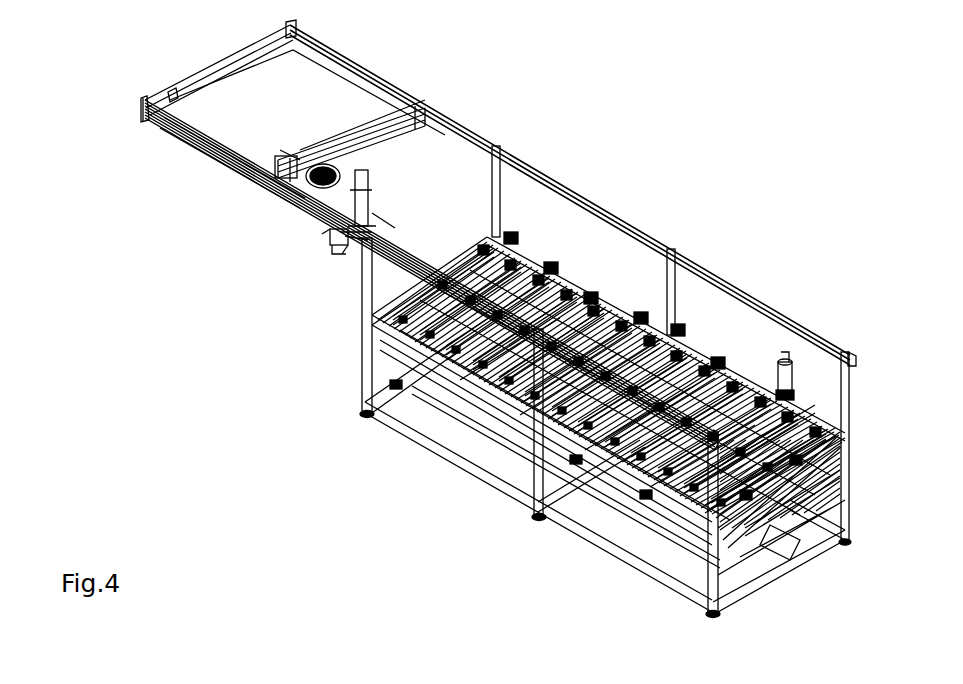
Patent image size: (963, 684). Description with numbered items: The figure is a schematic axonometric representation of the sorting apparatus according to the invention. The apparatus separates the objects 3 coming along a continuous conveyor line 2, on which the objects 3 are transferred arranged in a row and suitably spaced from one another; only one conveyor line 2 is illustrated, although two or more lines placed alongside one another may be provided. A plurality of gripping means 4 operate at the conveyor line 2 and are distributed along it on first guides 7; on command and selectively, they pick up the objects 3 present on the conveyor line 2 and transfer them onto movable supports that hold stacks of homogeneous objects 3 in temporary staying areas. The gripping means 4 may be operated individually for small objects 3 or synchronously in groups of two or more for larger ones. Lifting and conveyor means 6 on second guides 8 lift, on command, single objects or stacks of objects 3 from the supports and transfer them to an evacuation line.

The conveyor line 2 is at (805, 548).
The objects 3 is at (808, 470).
The gripping means 4 is at (510, 238).
The lifting and conveyor means 6 is at (322, 244).
The first guides 7 is at (388, 335).
The second guides 8 is at (233, 156).